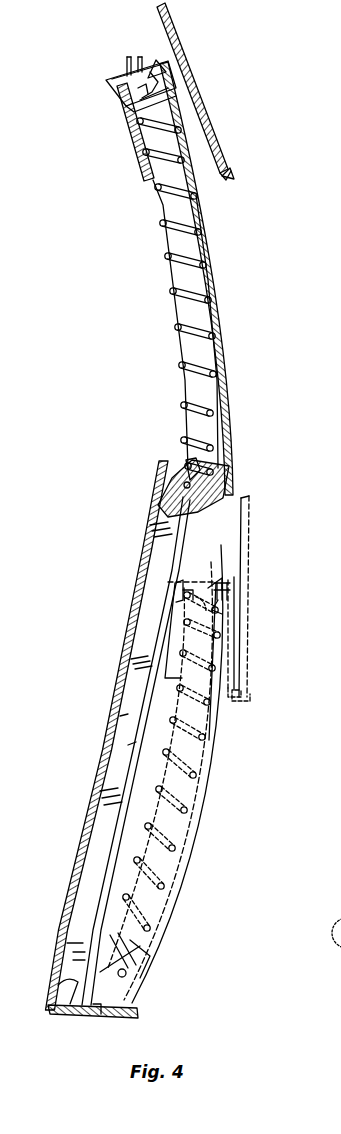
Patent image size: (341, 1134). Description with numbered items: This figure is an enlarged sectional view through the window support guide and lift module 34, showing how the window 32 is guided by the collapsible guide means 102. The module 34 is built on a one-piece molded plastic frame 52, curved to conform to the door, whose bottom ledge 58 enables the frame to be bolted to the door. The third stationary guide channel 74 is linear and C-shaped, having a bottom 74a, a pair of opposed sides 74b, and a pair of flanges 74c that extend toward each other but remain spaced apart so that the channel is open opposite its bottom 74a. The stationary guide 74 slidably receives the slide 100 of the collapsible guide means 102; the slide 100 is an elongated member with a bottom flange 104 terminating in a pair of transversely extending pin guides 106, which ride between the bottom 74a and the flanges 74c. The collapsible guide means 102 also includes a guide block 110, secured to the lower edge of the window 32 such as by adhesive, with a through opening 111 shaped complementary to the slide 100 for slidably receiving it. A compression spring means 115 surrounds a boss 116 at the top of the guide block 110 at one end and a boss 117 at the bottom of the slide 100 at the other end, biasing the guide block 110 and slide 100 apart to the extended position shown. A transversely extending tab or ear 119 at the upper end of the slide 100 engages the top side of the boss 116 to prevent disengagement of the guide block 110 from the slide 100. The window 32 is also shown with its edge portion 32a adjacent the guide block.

The window 32 is at (176, 41).
The panel flange 32a is at (226, 176).
The window support guide and lift module 34 is at (125, 584).
The frame 52 is at (81, 822).
The bottom ledge 58 is at (98, 1017).
The third stationary guide channel 74 is at (80, 850).
The bottom 74a is at (116, 694).
The opposed sides 74b is at (125, 714).
The flanges 74c is at (132, 744).
The slide 100 is at (220, 224).
The collapsible guide means 102 is at (105, 76).
The bottom flange 104 is at (210, 492).
The pin guides 106 is at (168, 507).
The guide block 110 is at (126, 143).
The through opening 111 is at (184, 129).
The compression spring means 115 is at (170, 228).
The boss 116 is at (140, 97).
The boss 117 is at (190, 476).
The tab or ear 119 is at (157, 62).